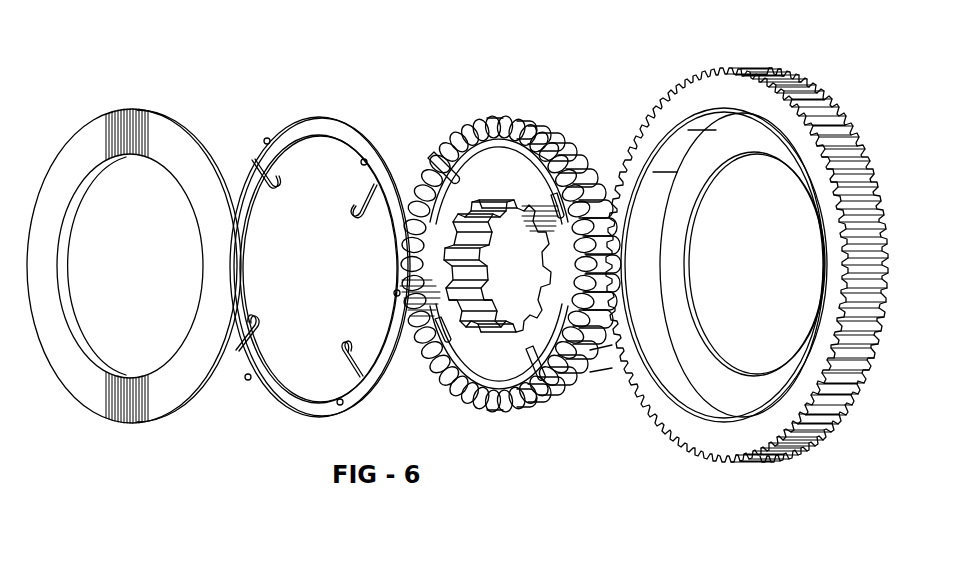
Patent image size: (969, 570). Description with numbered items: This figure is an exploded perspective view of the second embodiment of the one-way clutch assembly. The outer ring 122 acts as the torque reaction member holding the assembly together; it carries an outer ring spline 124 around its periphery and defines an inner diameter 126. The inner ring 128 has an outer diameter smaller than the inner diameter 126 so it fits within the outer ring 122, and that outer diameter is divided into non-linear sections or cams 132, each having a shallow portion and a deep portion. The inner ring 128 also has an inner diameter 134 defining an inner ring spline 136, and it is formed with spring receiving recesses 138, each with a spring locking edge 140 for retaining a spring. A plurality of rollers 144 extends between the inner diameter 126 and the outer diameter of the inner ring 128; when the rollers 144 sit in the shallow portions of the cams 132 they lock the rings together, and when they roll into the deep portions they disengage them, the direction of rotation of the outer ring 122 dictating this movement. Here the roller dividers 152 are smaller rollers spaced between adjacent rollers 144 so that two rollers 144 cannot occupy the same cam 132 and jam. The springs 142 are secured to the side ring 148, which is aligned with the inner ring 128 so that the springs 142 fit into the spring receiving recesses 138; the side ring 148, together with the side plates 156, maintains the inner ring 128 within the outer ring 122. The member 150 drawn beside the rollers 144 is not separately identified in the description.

The outer ring 122 is at (747, 235).
The outer ring spline 124 is at (840, 108).
The inner diameter 126 is at (677, 190).
The inner ring 128 is at (508, 263).
The cam 132 is at (530, 158).
The inner diameter 134 is at (495, 302).
The inner ring spline 136 is at (479, 266).
The spring receiving recess 138 is at (440, 163).
The spring locking edge 140 is at (466, 138).
The spring 142 is at (276, 178).
The roller 144 is at (492, 117).
The side ring 148 is at (320, 275).
The link plate 150 is at (587, 360).
The roller divider 152 is at (478, 120).
The side plate 156 is at (207, 162).